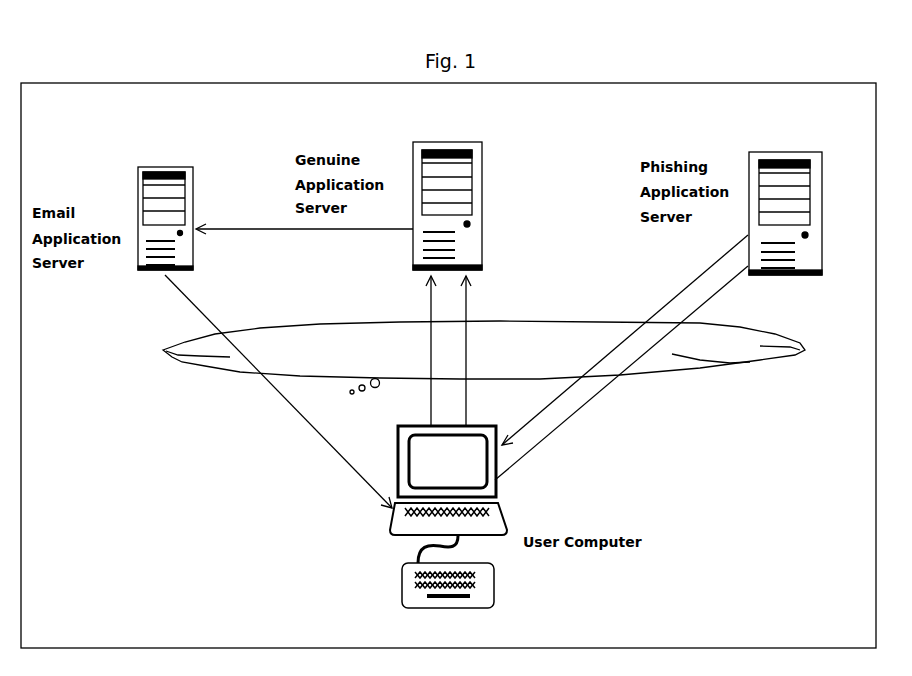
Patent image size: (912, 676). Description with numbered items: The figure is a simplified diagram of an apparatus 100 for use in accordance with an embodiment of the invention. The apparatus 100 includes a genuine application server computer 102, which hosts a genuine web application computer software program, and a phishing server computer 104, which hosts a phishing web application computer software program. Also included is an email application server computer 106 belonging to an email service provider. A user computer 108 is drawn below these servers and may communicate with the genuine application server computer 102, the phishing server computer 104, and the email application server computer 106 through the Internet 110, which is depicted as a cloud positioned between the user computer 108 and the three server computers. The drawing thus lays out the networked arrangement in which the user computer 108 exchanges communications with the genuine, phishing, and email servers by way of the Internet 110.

The apparatus 100 is at (667, 78).
The genuine application server computer 102 is at (440, 142).
The phishing server computer 104 is at (775, 152).
The email application server computer 106 is at (157, 166).
The user computer 108 is at (505, 513).
The Internet 110 is at (730, 347).